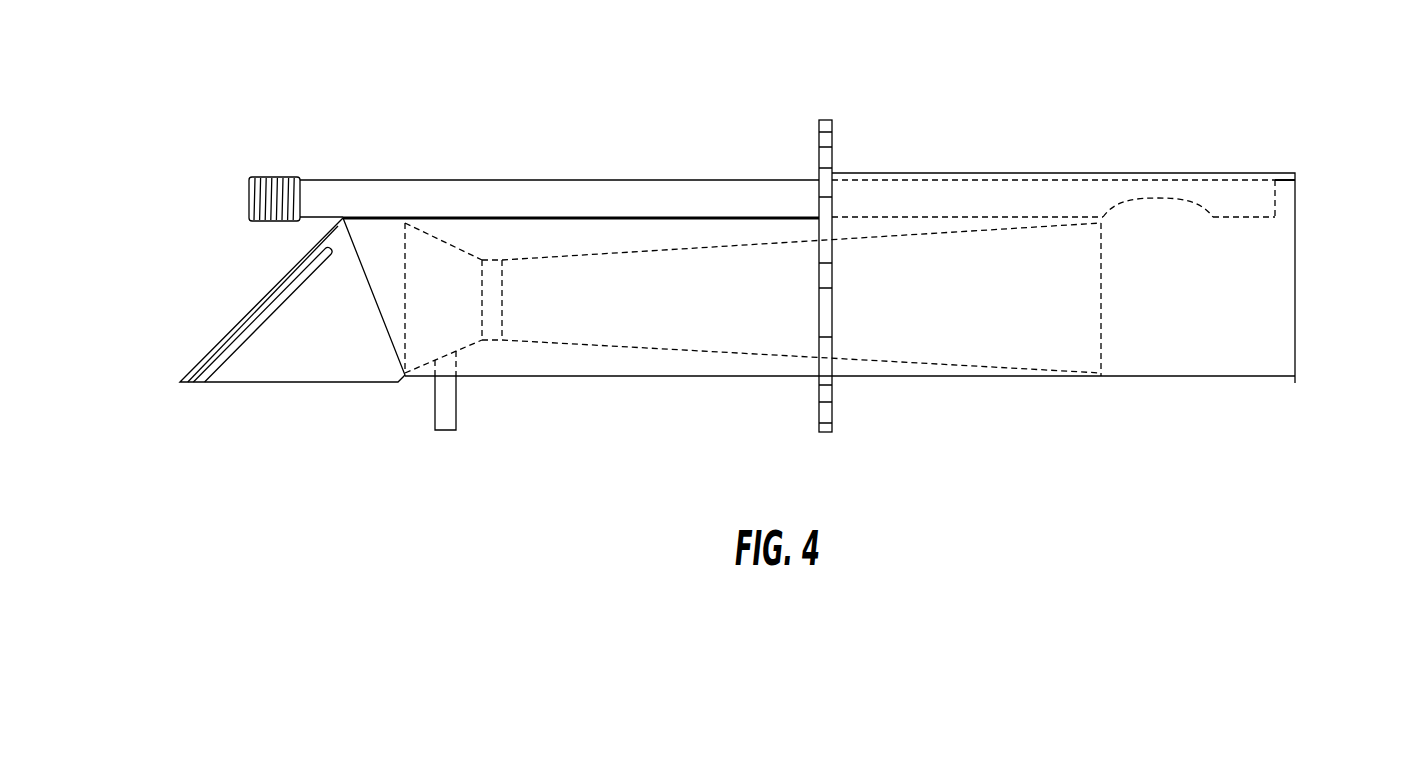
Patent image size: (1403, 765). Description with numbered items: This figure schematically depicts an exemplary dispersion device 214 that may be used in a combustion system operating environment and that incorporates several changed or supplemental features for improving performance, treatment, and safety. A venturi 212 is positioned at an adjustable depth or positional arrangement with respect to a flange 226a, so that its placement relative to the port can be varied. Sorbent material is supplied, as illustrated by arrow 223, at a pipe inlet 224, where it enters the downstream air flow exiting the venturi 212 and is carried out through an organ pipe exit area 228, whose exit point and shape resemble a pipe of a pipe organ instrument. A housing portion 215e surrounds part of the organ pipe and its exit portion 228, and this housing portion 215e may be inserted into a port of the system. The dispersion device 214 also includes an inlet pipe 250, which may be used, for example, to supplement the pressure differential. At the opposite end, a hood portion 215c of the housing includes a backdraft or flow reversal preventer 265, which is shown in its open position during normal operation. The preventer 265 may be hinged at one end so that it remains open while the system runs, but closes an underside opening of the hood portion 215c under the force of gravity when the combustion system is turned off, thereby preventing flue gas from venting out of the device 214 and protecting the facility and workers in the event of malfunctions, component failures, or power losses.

The dispersion device 214 is at (717, 93).
The sorbent material supply arrow 223 is at (232, 200).
The pipe inlet 224 is at (268, 178).
The hood portion 215c is at (227, 325).
The backdraft or flow reversal preventer 265 is at (289, 310).
The venturi 212 is at (524, 256).
The inlet pipe 250 is at (456, 433).
The flange 226a is at (833, 115).
The housing portion 215e is at (1083, 173).
The organ pipe exit area 228 is at (1260, 268).